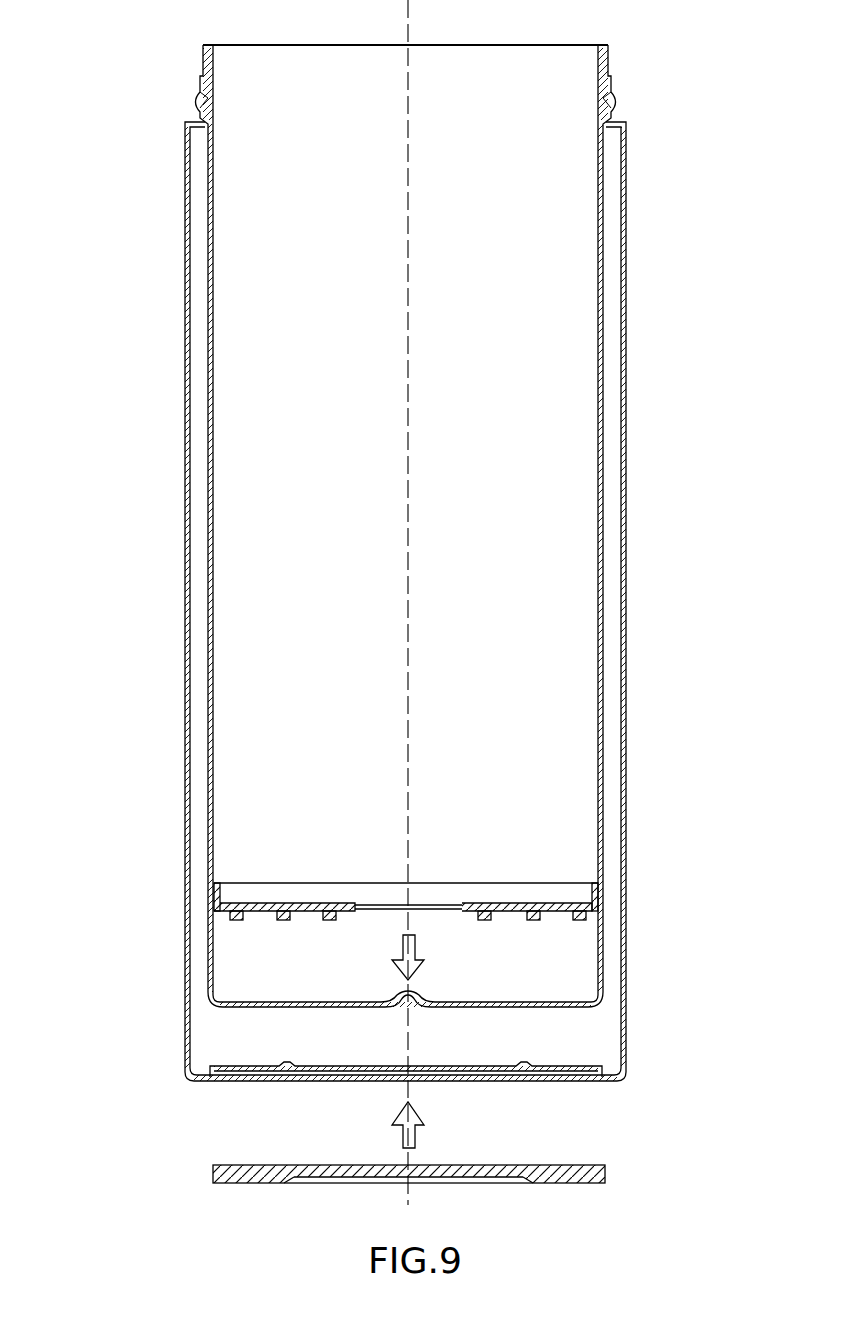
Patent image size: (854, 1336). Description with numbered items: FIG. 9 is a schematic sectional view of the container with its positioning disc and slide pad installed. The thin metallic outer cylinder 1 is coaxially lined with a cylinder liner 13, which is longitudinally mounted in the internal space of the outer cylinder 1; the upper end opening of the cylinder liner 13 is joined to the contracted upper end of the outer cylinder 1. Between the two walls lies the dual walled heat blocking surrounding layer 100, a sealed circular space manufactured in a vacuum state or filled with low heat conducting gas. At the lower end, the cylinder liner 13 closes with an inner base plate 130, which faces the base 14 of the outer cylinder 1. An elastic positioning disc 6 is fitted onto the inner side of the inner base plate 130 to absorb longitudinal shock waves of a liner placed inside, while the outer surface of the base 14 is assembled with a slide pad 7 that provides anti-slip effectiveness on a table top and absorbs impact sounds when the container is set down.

The outer cylinder 1 is at (338, 563).
The heat blocking surrounding layer 100 is at (198, 625).
The cylinder liner 13 is at (213, 340).
The inner base plate 130 is at (262, 1000).
The elastic positioning disc 6 is at (537, 893).
The base 14 is at (308, 1070).
The slide pad 7 is at (578, 1167).